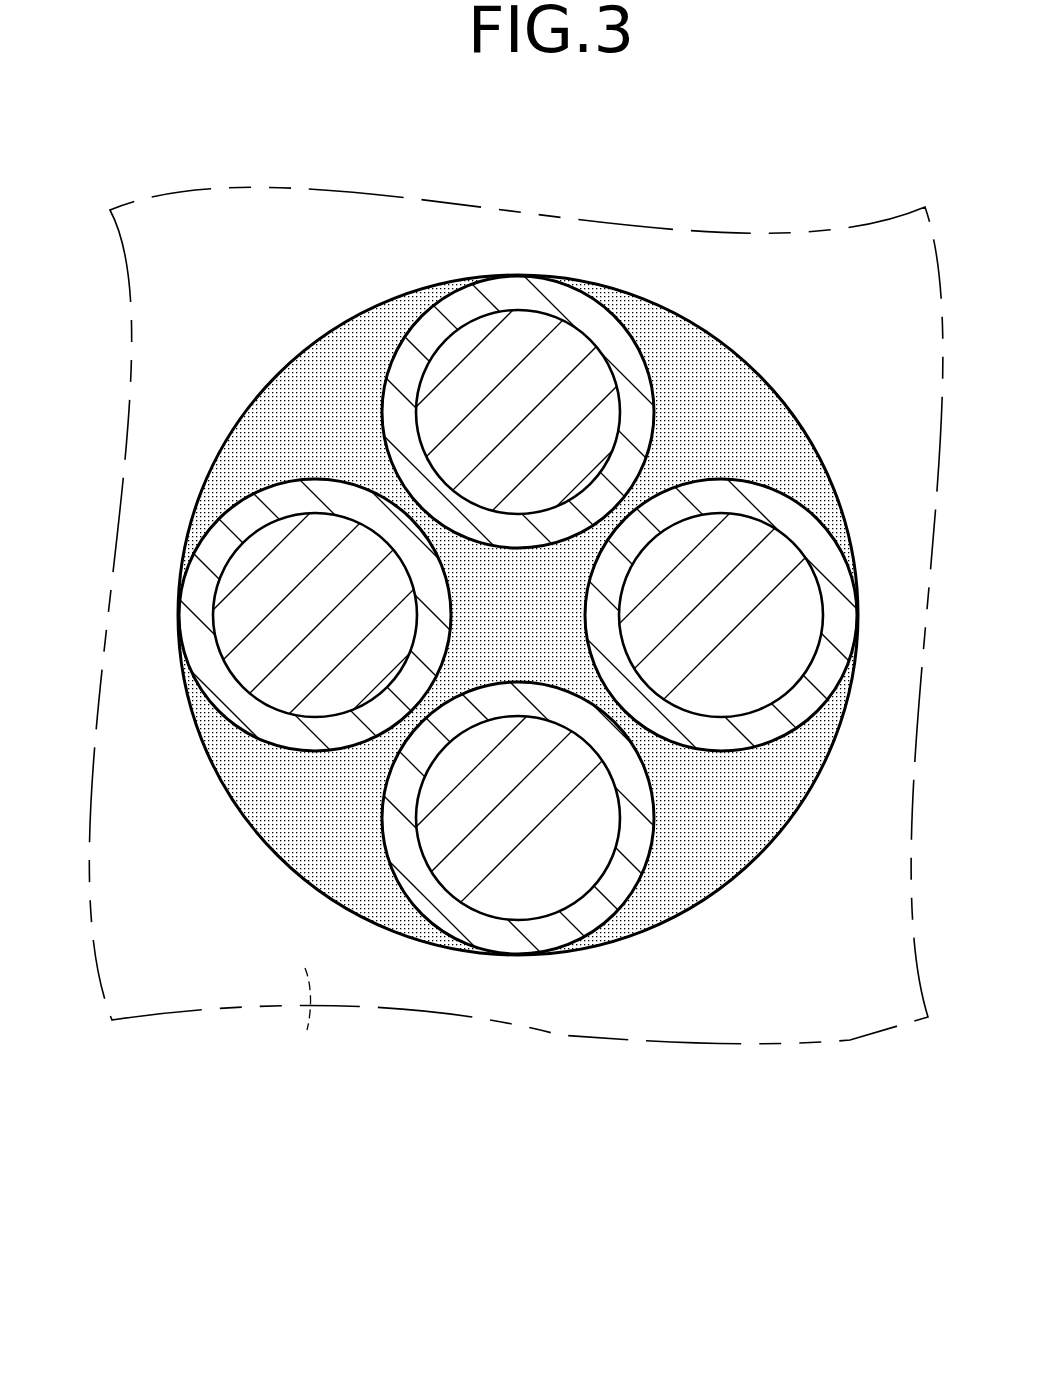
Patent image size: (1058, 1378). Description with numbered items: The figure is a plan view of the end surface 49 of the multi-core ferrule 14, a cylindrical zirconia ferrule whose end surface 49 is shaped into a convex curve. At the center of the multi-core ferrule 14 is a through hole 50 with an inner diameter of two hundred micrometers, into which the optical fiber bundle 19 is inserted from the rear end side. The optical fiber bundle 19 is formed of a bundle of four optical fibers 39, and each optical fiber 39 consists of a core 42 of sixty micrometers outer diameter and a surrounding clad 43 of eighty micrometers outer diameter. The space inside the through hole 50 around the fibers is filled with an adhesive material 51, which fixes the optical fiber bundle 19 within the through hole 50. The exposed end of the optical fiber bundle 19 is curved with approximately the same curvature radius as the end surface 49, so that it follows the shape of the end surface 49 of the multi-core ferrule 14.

The multi-core ferrule 14 is at (140, 1017).
The optical fiber bundle 19 is at (395, 1170).
The optical fiber 39 is at (500, 953).
The core 42 is at (548, 903).
The clad 43 is at (590, 917).
The end surface 49 is at (313, 1023).
The through hole 50 is at (290, 830).
The adhesive material 51 is at (668, 880).